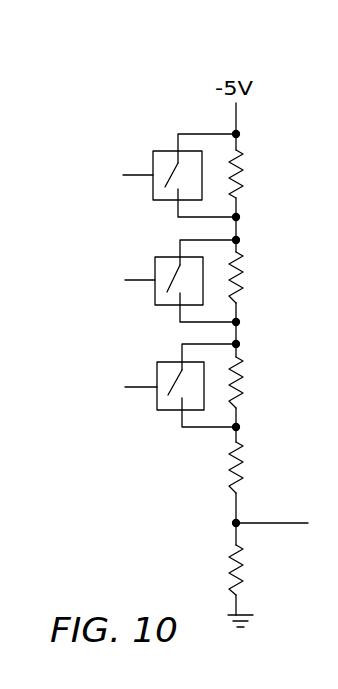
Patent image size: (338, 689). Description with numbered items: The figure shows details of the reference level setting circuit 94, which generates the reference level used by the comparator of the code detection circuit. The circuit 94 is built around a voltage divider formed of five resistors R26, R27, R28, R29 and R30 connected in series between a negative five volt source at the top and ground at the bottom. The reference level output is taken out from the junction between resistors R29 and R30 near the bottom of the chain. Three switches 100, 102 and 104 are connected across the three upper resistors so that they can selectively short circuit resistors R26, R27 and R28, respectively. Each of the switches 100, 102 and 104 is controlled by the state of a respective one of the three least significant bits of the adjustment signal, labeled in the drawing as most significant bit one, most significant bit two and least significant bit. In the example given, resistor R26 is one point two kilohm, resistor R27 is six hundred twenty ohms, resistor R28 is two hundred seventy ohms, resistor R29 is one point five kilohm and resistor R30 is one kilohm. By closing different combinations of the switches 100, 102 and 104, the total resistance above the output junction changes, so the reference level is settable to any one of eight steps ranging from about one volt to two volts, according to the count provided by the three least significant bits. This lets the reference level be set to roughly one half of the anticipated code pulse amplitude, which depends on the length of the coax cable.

The reference level setting circuit 94 is at (128, 100).
The switch 100 is at (153, 193).
The switch 102 is at (155, 300).
The switch 104 is at (155, 403).
The resistor R26 is at (240, 156).
The resistor R27 is at (240, 259).
The resistor R28 is at (240, 364).
The resistor R29 is at (240, 458).
The resistor R30 is at (232, 562).